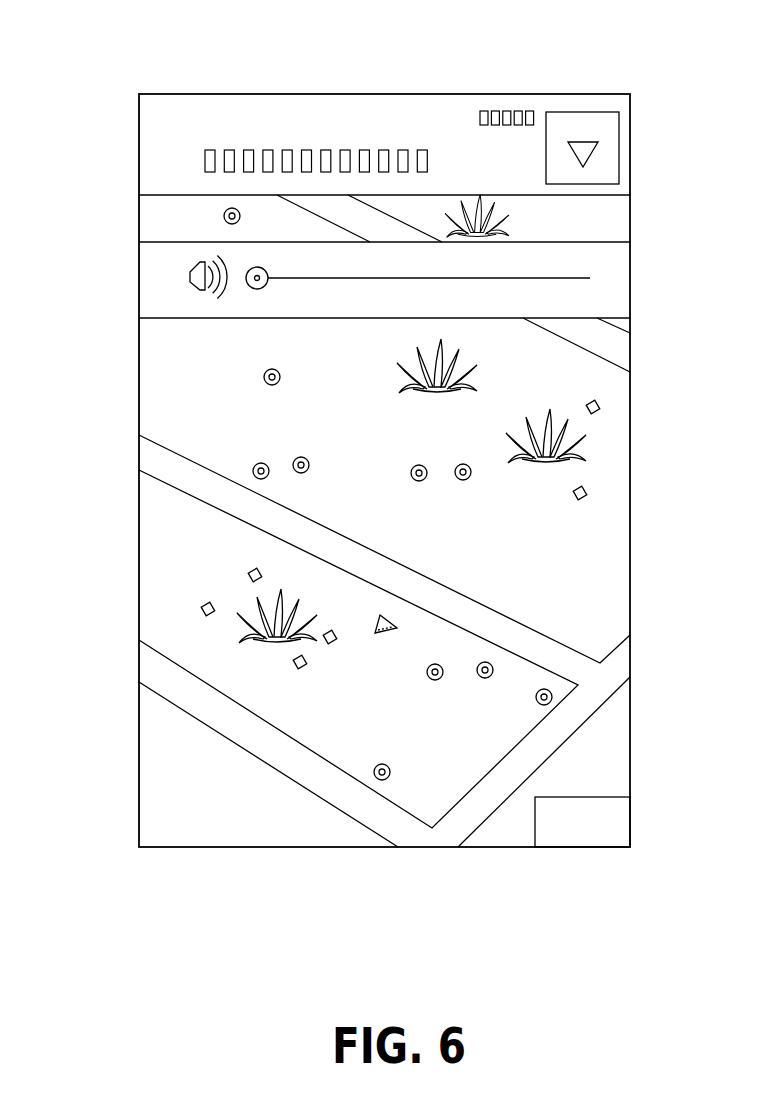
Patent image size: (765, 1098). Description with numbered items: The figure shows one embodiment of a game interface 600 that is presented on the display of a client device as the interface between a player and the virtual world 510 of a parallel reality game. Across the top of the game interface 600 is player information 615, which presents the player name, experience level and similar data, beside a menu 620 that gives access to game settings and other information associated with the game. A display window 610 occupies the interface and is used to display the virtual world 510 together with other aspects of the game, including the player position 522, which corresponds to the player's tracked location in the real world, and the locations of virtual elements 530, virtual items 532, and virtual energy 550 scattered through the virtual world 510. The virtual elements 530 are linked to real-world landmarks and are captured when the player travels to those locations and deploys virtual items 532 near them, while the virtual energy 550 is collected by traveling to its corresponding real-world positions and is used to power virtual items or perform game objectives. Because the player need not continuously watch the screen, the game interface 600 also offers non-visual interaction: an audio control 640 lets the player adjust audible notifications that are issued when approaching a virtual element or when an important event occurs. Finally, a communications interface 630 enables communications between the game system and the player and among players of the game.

The game interface 600 is at (355, 47).
The player information 615 is at (153, 116).
The menu 620 is at (610, 146).
The display window 610 is at (618, 222).
The audio control 640 is at (152, 263).
The virtual world 510 is at (618, 551).
The virtual elements 530 is at (405, 366).
The virtual energy 550 is at (280, 382).
The virtual items 532 is at (248, 576).
The player position 522 is at (378, 628).
The communications interface 630 is at (622, 824).